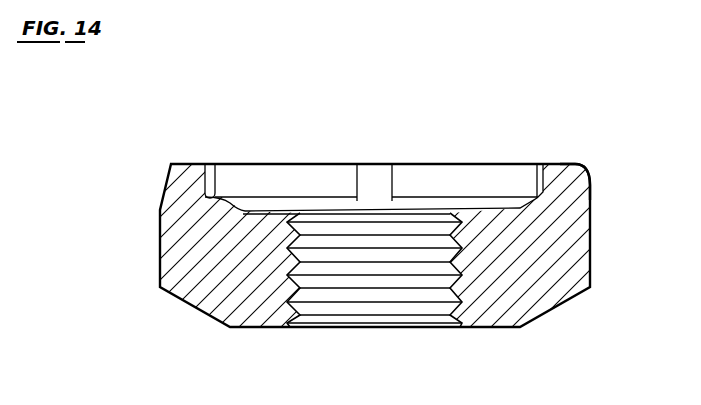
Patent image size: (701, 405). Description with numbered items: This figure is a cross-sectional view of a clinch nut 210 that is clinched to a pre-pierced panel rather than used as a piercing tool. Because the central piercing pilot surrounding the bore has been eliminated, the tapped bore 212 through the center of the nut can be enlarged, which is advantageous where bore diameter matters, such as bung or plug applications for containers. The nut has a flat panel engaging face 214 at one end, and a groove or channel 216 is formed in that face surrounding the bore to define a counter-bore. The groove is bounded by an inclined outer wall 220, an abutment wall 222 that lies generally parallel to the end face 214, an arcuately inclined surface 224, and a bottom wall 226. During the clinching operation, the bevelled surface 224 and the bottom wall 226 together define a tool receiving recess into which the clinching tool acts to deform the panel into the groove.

The nut 210 is at (188, 288).
The tapped bore 212 is at (358, 310).
The flat panel engaging face 214 is at (553, 163).
The groove or channel 216 is at (234, 171).
The inclined outer wall 220 is at (214, 166).
The abutment wall 222 is at (567, 186).
The arcuately inclined surface 224 is at (520, 200).
The bottom wall 226 is at (249, 212).